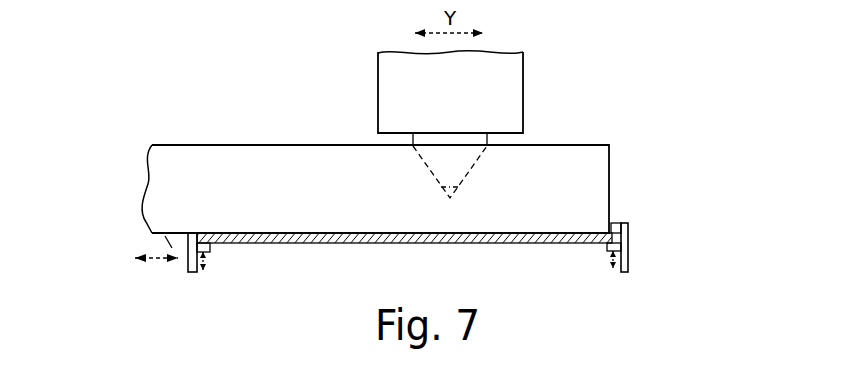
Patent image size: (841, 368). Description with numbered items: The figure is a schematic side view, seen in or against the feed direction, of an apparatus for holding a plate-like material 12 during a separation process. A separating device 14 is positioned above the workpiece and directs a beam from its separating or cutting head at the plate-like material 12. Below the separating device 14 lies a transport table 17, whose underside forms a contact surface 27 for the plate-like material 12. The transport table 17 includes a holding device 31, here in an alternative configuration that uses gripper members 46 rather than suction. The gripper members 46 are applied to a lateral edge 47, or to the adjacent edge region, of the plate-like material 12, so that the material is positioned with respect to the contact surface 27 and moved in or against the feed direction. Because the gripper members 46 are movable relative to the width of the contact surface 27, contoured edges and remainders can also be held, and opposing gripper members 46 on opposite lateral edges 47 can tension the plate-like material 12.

The plate-like material 12 is at (313, 244).
The separating device 14 is at (502, 90).
The transport table 17 is at (543, 168).
The contact surface 27 is at (163, 235).
The holding device 31 is at (619, 211).
The gripper member 46 is at (607, 248).
The lateral edge 47 is at (628, 236).